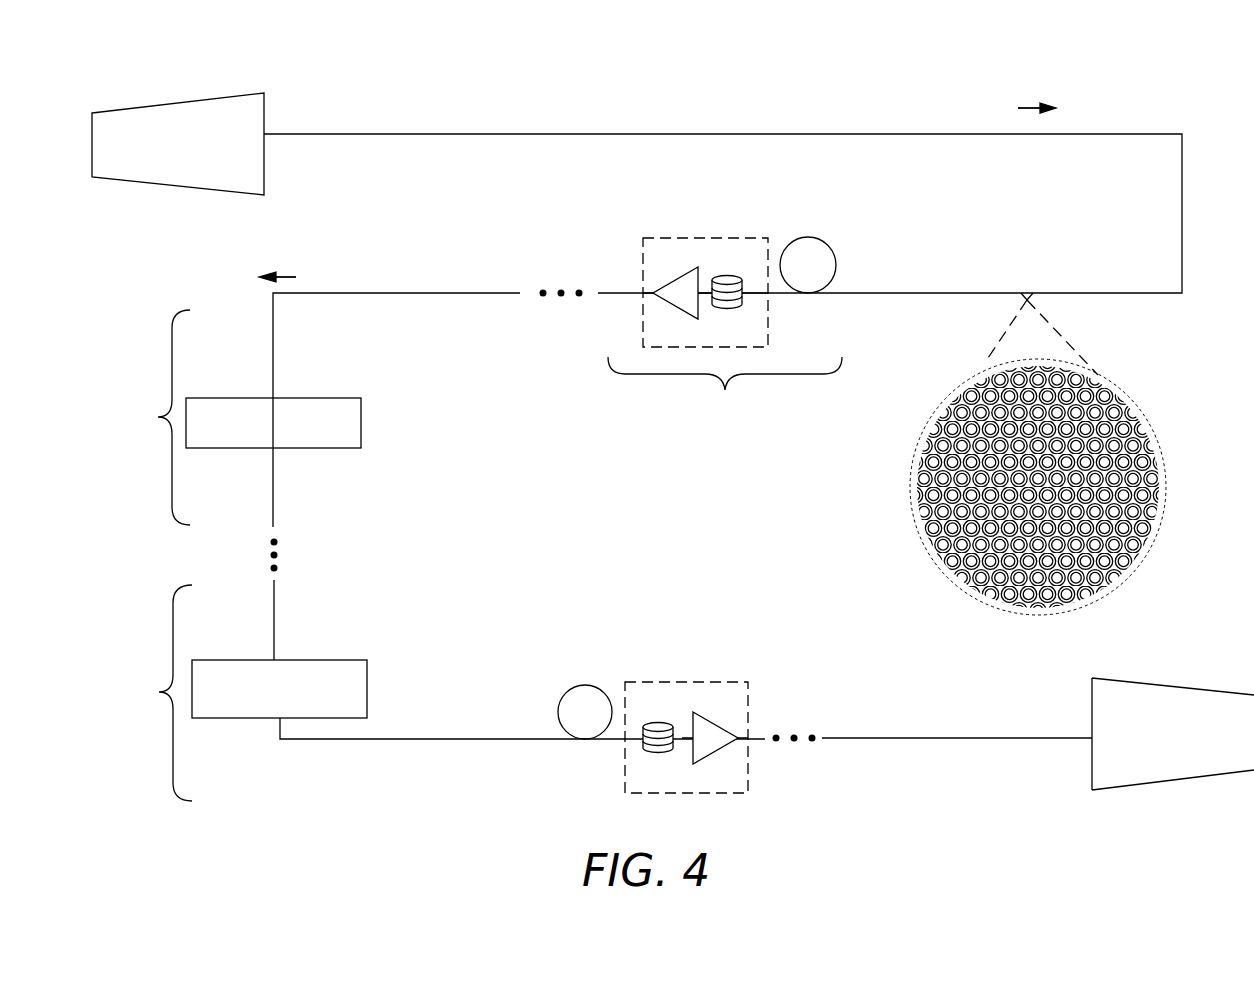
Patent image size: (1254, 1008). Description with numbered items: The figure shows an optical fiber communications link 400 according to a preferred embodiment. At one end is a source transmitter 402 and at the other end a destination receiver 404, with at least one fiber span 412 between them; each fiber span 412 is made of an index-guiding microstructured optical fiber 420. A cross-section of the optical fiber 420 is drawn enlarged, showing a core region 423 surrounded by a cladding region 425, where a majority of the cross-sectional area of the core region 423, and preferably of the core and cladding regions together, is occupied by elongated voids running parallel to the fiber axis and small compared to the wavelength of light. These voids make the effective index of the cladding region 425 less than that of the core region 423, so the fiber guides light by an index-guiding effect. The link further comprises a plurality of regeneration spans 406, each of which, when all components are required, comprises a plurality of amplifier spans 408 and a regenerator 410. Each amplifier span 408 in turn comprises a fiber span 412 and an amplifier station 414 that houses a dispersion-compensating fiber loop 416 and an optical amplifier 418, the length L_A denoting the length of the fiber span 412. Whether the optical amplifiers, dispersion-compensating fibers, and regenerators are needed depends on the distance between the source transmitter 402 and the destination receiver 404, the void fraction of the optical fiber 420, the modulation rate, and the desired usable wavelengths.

The optical fiber communications link 400 is at (1131, 80).
The source transmitter 402 is at (178, 187).
The destination receiver 404 is at (1185, 782).
The regeneration span 406 is at (150, 555).
The amplifier span 408 is at (725, 390).
The regenerator 410 is at (199, 398).
The fiber span 412 is at (808, 238).
The amplifier station 414 is at (661, 238).
The dispersion-compensating fiber loop 416 is at (728, 277).
The optical amplifier 418 is at (655, 290).
The index-guiding microstructured optical fiber 420 is at (912, 488).
The core region 423 is at (1045, 497).
The cladding region 425 is at (1045, 585).